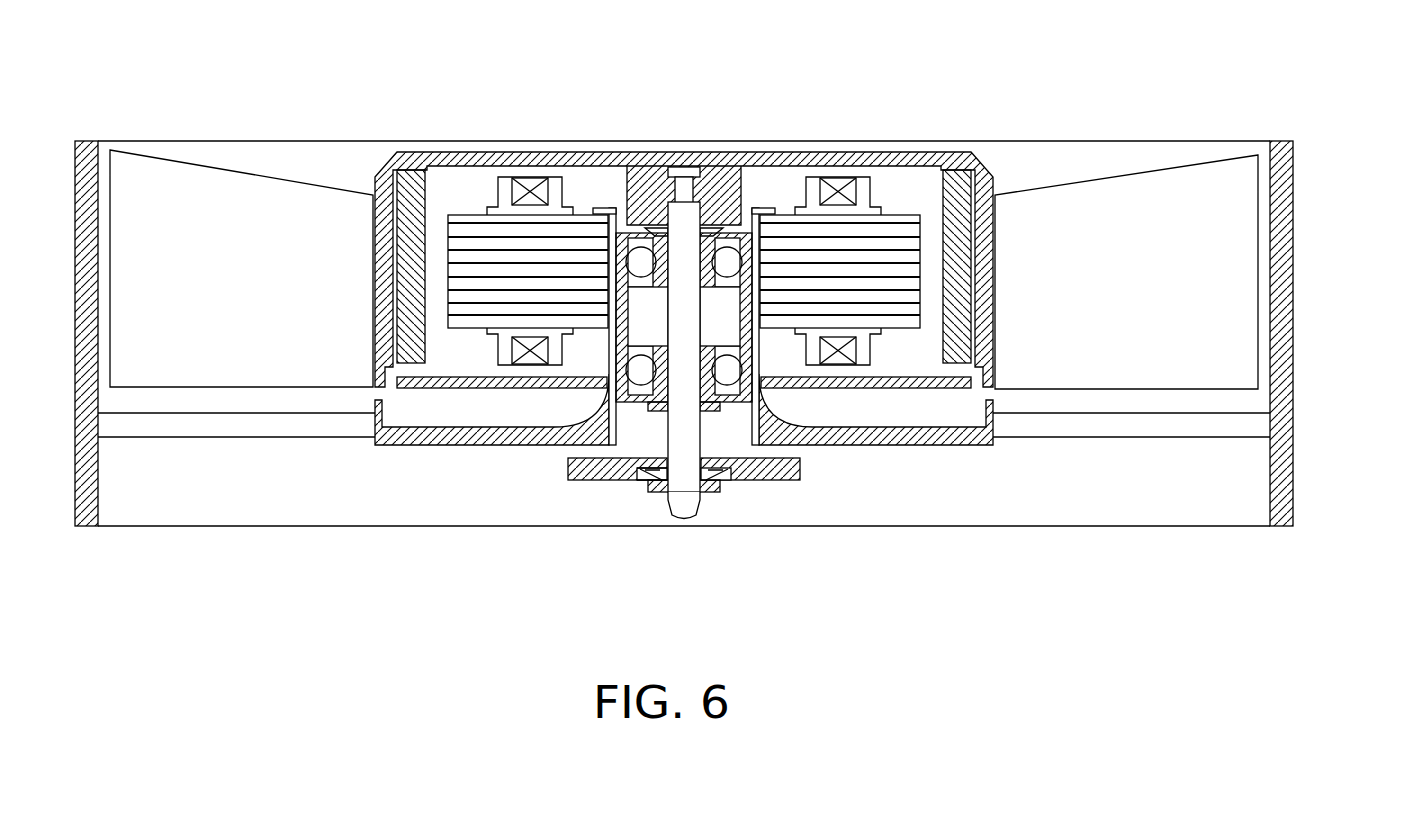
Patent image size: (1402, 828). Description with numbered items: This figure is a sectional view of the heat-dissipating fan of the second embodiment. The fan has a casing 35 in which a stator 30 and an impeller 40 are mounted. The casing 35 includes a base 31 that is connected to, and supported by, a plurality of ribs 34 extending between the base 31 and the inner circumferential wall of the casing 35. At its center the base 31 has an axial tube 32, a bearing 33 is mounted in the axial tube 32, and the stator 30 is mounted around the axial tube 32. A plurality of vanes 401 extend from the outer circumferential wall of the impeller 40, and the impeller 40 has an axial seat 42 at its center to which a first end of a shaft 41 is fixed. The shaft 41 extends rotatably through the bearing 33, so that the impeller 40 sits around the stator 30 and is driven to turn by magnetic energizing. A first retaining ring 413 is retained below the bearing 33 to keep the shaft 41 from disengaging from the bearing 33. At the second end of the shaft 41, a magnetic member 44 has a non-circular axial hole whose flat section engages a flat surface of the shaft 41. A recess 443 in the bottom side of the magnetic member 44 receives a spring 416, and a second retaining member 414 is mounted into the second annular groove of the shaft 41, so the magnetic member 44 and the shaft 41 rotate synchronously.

The stator 30 is at (467, 233).
The base 31 is at (433, 445).
The axial tube 32 is at (610, 362).
The bearing 33 is at (728, 250).
The ribs 34 is at (240, 428).
The casing 35 is at (1290, 322).
The impeller 40 is at (843, 152).
The vanes 401 is at (246, 200).
The shaft 41 is at (685, 205).
The axial seat 42 is at (617, 205).
The first retaining ring 413 is at (745, 404).
The second retaining member 414 is at (708, 493).
The spring 416 is at (717, 473).
The magnetic member 44 is at (583, 470).
The recess 443 is at (645, 482).